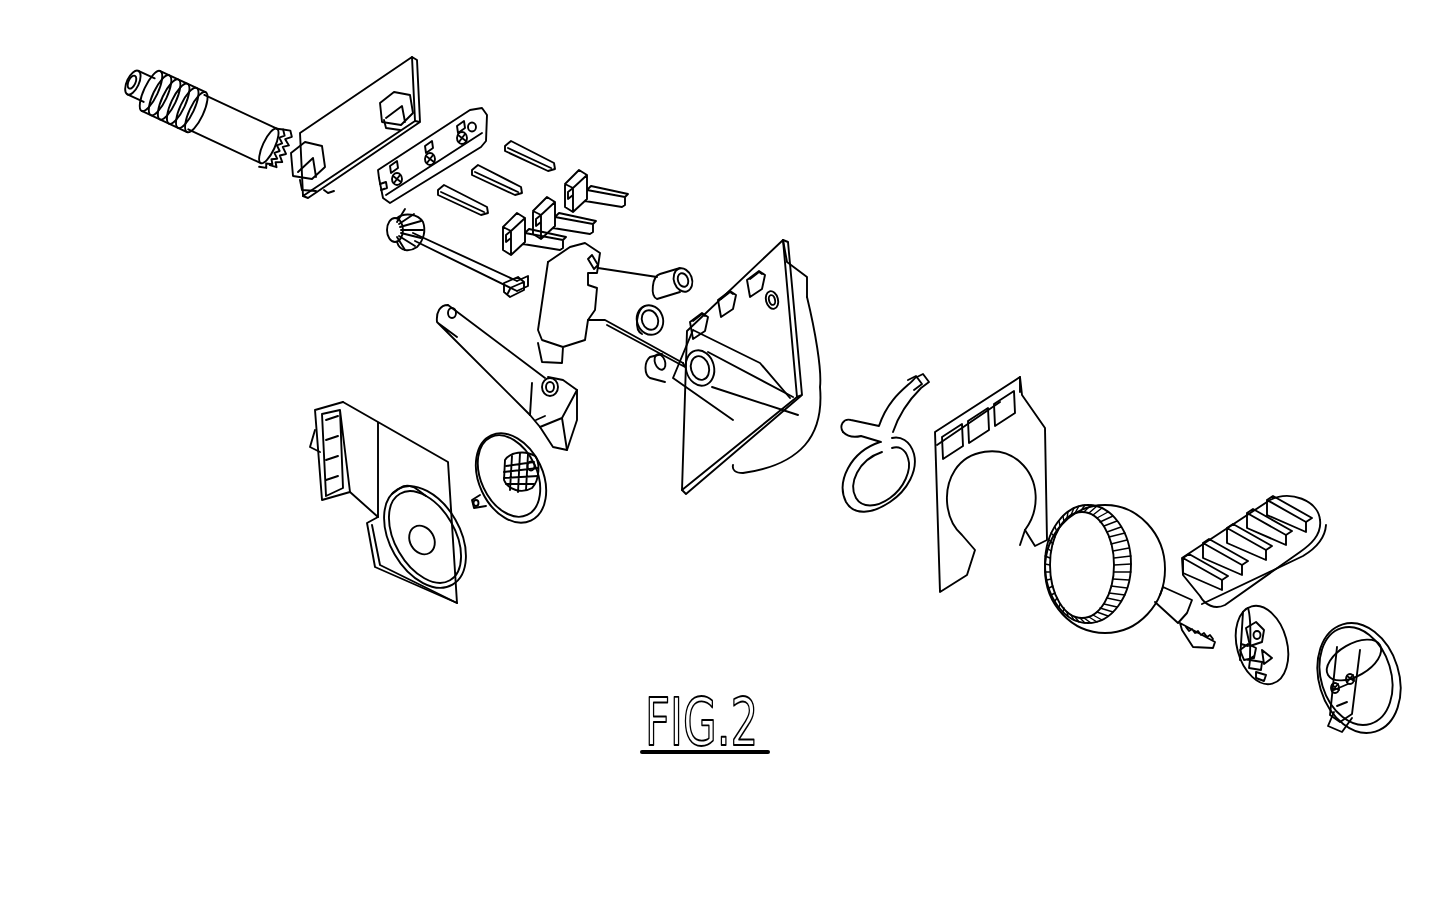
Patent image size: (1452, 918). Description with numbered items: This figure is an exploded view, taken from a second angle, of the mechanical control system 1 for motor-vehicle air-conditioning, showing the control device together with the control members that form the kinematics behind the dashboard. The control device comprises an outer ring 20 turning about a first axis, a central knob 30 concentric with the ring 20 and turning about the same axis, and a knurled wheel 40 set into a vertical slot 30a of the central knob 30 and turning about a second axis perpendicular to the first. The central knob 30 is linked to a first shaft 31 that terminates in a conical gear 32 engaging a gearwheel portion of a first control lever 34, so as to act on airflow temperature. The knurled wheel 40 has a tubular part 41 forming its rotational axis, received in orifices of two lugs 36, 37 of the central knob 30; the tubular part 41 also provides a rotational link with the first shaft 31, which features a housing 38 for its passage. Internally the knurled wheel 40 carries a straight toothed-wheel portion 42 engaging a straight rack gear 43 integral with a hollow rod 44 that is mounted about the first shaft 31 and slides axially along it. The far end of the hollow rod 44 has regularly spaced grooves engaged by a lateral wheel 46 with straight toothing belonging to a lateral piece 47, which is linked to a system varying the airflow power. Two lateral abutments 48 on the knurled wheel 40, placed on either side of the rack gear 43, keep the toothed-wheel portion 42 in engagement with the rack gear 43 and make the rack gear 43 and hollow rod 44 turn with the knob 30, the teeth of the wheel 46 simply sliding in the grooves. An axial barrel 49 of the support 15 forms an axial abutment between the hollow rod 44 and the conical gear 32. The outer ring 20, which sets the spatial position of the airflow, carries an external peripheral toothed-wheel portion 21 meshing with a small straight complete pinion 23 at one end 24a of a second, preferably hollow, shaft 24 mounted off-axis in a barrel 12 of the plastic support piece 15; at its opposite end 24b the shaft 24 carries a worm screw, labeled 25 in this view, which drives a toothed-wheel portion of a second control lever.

The mechanical control system 1 is at (978, 252).
The barrel 12 is at (753, 403).
The support piece 15 is at (710, 383).
The outer ring 20 is at (1088, 546).
The toothed-wheel portion 21 is at (1068, 616).
The pinion 23 is at (274, 128).
The second shaft 24 is at (200, 119).
The end of second shaft 24a is at (258, 158).
The opposite end of second shaft 24b is at (138, 90).
The threaded portion 25 is at (182, 74).
The central knob 30 is at (1360, 737).
The slot 30a is at (1362, 740).
The first shaft 31 is at (466, 285).
The conical gear 32 is at (392, 252).
The first control lever 34 is at (486, 364).
The lug 36 is at (1373, 695).
The lug 37 is at (1338, 642).
The housing 38 is at (514, 292).
The knurled wheel 40 is at (1264, 663).
The tubular part 41 is at (1258, 607).
The toothed-wheel portion 42 is at (1247, 662).
The rack gear 43 is at (1188, 635).
The hollow rod 44 is at (1181, 585).
The lateral wheel 46 is at (527, 502).
The lateral piece 47 is at (510, 520).
The lateral abutments 48 is at (1273, 640).
The axial barrel 49 is at (658, 376).